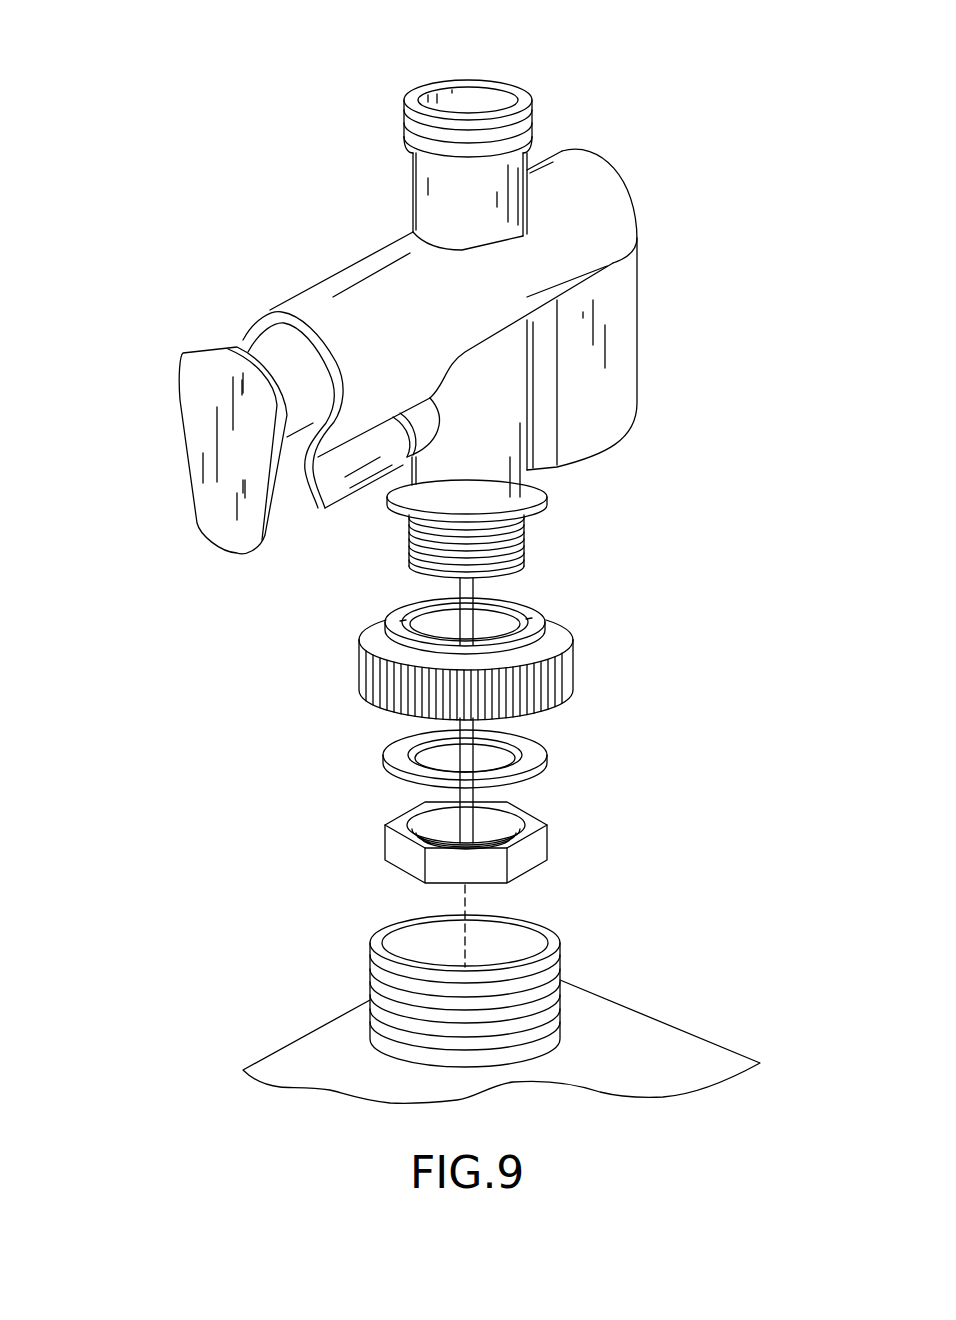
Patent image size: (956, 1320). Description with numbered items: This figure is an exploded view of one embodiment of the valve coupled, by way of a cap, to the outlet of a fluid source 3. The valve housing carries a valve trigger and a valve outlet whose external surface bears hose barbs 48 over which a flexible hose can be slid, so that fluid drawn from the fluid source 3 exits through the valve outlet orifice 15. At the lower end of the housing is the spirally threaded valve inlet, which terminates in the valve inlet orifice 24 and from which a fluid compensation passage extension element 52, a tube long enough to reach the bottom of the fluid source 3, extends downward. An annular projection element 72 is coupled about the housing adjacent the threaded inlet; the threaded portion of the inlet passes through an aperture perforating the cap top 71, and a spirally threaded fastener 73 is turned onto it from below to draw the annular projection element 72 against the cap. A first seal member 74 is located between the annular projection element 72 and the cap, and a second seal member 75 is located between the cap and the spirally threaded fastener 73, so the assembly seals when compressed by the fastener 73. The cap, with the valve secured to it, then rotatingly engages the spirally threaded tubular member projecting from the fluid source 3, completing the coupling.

The valve outlet orifice 15 is at (471, 104).
The hose barbs 48 is at (533, 121).
The annular projection element 72 is at (545, 496).
The fluid compensation passage extension element 52 is at (478, 593).
The valve inlet orifice 24 is at (420, 574).
The first seal member 74 is at (535, 626).
The cap top 71 is at (575, 668).
The second seal member 75 is at (547, 750).
The spirally threaded fastener 73 is at (550, 840).
The fluid source 3 is at (695, 1045).